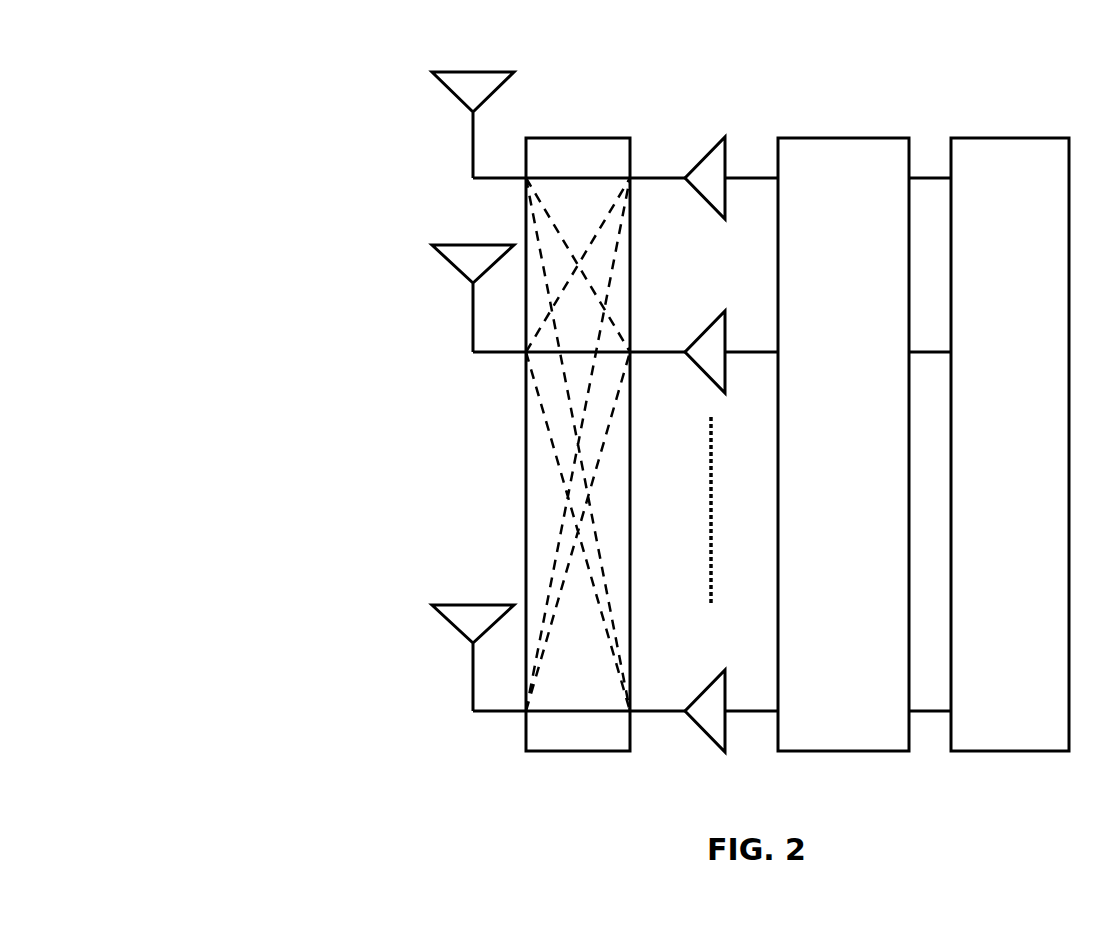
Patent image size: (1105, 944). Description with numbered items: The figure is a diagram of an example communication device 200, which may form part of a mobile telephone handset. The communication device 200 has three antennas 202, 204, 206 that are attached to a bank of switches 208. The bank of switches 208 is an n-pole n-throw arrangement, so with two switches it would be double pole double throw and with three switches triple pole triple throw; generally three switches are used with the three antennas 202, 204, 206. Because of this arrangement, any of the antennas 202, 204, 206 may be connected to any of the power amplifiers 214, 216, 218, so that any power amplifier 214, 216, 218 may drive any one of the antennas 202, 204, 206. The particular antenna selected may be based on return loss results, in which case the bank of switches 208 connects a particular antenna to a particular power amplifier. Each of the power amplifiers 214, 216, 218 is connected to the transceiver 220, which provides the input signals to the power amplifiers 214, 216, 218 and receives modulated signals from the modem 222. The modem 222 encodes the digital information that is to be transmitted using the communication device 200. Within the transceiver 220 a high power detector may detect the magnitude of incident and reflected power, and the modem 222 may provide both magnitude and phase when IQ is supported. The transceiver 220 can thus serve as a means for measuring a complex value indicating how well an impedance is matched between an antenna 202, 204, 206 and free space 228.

The communication device 200 is at (256, 161).
The antenna 202 is at (456, 95).
The antenna 204 is at (456, 266).
The antenna 206 is at (456, 626).
The bank of switches 208 is at (584, 751).
The power amplifier 214 is at (710, 203).
The power amplifier 216 is at (704, 371).
The power amplifier 218 is at (701, 727).
The transceiver 220 is at (838, 751).
The modem 222 is at (1023, 751).
The free space 228 is at (698, 45).